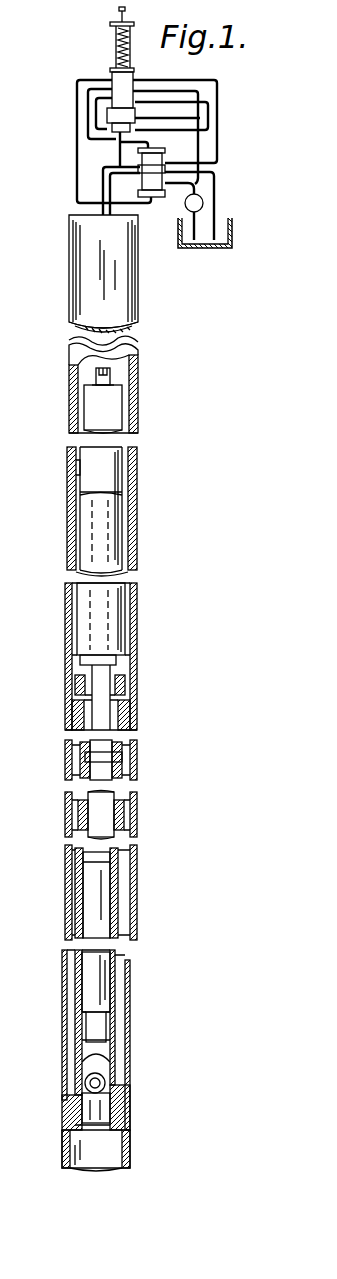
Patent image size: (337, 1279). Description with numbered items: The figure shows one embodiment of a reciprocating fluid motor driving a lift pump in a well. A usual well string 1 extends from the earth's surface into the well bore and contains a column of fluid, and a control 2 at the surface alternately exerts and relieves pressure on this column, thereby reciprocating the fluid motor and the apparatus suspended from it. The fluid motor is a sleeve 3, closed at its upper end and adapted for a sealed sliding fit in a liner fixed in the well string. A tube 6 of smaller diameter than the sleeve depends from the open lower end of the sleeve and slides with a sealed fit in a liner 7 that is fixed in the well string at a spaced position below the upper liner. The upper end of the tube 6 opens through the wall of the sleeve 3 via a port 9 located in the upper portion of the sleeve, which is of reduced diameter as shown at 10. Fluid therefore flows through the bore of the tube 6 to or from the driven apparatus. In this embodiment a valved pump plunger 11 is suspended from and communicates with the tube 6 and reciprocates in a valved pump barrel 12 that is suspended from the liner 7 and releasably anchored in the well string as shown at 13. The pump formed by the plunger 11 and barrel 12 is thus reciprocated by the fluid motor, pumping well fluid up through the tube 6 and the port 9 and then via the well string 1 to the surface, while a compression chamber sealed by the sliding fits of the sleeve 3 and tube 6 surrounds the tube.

The well string 1 is at (124, 325).
The control 2 is at (224, 150).
The sleeve 3 is at (114, 537).
The tube 6 is at (101, 621).
The liner 7 is at (114, 883).
The port 9 is at (112, 494).
The reduced diameter portion 10 is at (67, 488).
The valved pump plunger 11 is at (100, 990).
The valved pump barrel 12 is at (112, 1048).
The releasable anchor 13 is at (118, 1104).